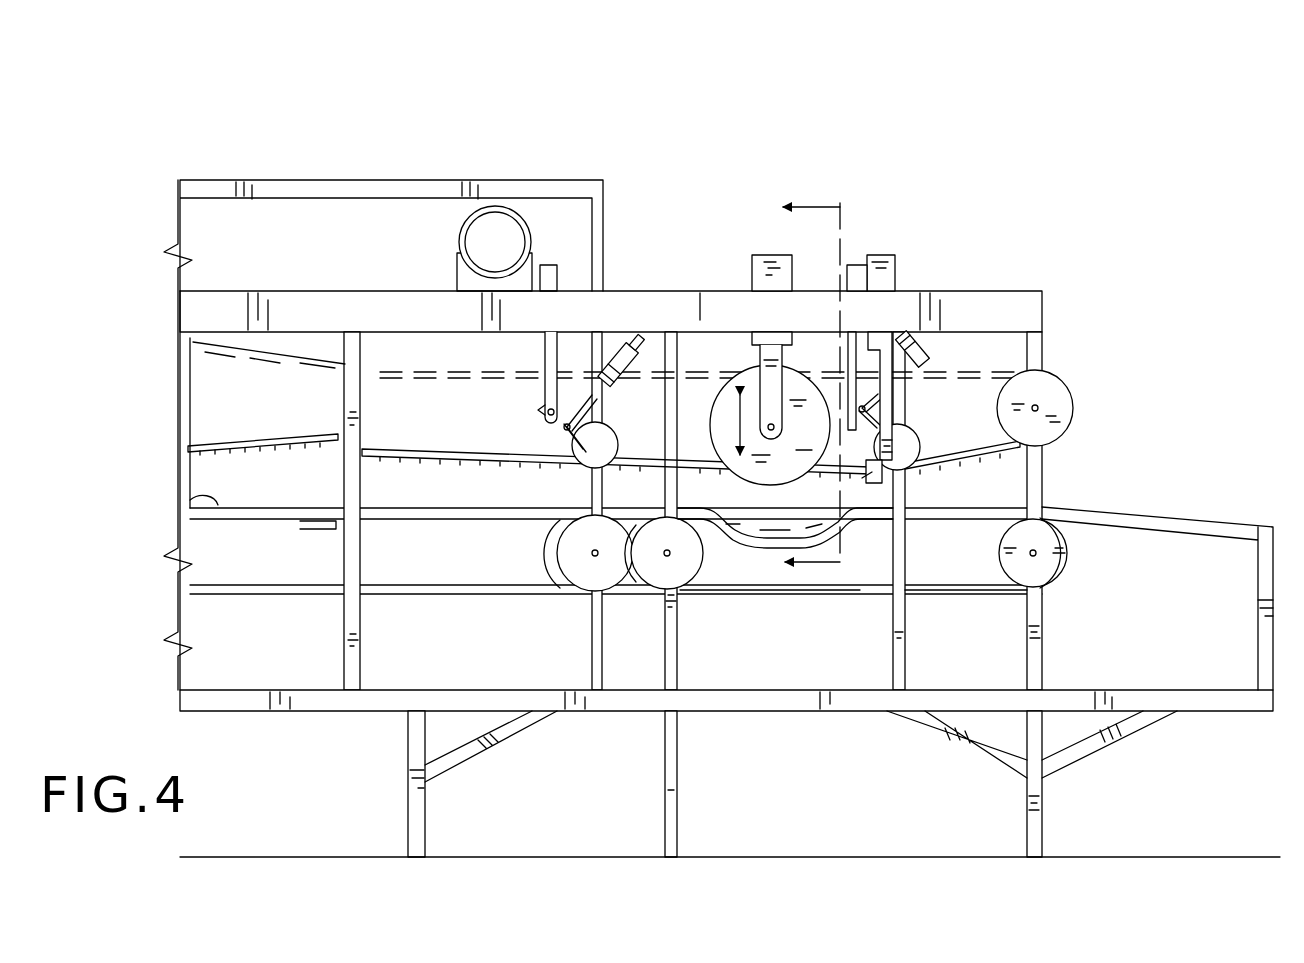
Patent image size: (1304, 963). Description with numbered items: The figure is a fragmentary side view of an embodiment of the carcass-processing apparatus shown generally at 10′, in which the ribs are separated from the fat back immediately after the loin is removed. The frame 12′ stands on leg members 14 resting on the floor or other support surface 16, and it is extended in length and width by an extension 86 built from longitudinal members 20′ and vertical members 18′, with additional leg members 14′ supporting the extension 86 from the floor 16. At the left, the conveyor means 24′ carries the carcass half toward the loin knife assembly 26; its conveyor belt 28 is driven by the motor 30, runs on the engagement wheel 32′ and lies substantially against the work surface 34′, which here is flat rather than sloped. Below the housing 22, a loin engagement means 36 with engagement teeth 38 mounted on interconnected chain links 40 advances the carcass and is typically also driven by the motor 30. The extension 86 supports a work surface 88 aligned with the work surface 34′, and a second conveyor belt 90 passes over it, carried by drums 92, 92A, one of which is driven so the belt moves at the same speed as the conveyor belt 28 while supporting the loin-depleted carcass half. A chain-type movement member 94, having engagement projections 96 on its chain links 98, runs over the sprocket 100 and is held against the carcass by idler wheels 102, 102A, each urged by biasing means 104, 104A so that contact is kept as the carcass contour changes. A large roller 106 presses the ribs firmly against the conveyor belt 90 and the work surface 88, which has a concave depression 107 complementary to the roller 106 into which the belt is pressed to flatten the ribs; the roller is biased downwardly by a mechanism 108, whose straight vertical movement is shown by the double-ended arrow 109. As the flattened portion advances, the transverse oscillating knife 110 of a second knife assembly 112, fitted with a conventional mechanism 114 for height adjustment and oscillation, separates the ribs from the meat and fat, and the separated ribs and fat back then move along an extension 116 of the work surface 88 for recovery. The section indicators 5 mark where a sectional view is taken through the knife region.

The embodiment of the apparatus 10′ is at (673, 93).
The frame 12′ is at (1022, 290).
The leg member 14 is at (408, 815).
The additional leg member 14′ is at (677, 825).
The floor or support surface 16 is at (558, 858).
The vertical member 18′ is at (677, 657).
The longitudinal member 20′ is at (1193, 711).
The housing 22 is at (402, 181).
The conveyor means 24′ is at (407, 503).
The loin knife assembly 26 is at (196, 440).
The conveyor belt 28 is at (192, 508).
The motor 30 is at (507, 248).
The engagement wheel 32′ is at (560, 530).
The work surface 34′ is at (440, 524).
The loin engagement means 36 is at (276, 440).
The engagement teeth 38 is at (260, 440).
The chain links 40 is at (338, 437).
The extension 86 is at (633, 288).
The work surface 88 is at (955, 520).
The second conveyor belt 90 is at (838, 590).
The drum 92 is at (705, 548).
The drum 92A is at (1008, 570).
The chain-type movement member 94 is at (988, 460).
The engagement projections 96 is at (928, 466).
The chain links 98 is at (532, 470).
The sprocket 100 is at (1073, 404).
The idler wheel 102 is at (562, 448).
The idler wheel 102A is at (920, 446).
The biasing means 104 is at (636, 360).
The biasing means 104A is at (927, 354).
The large roller 106 is at (742, 375).
The concave depression 107 is at (736, 540).
The biasing mechanism 108 is at (752, 255).
The double-ended arrow 109 is at (736, 428).
The oscillating knife 110 is at (872, 472).
The second knife assembly 112 is at (897, 398).
The height adjustment and oscillation mechanism 114 is at (898, 255).
The work surface extension 116 is at (1135, 513).
The section line 5 is at (796, 387).